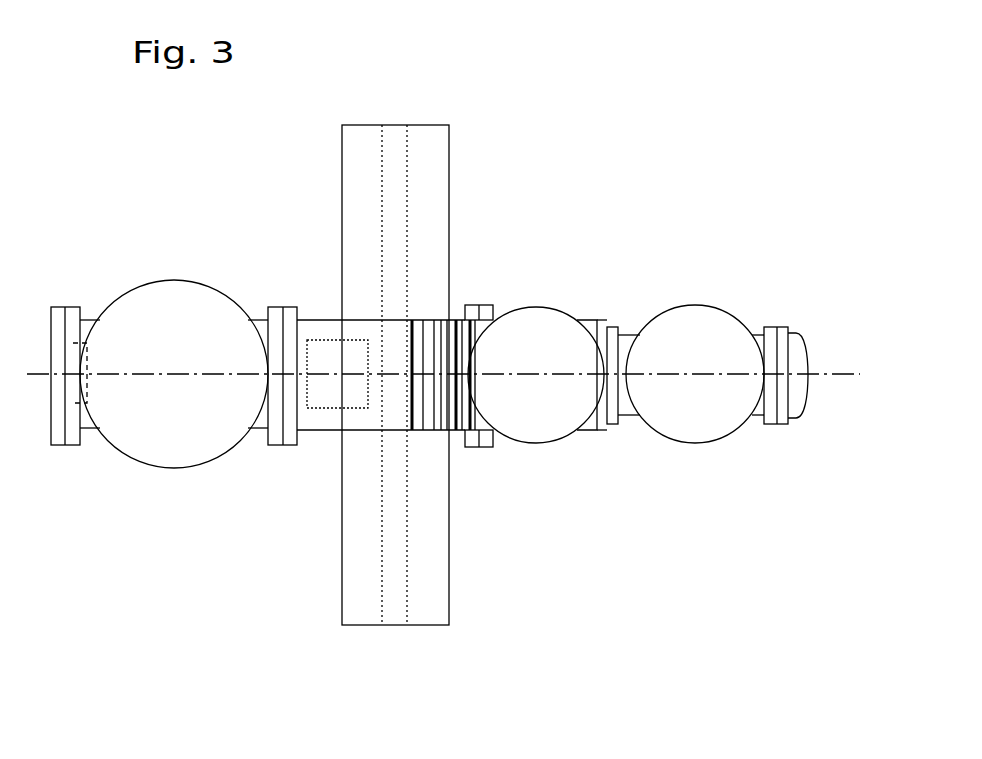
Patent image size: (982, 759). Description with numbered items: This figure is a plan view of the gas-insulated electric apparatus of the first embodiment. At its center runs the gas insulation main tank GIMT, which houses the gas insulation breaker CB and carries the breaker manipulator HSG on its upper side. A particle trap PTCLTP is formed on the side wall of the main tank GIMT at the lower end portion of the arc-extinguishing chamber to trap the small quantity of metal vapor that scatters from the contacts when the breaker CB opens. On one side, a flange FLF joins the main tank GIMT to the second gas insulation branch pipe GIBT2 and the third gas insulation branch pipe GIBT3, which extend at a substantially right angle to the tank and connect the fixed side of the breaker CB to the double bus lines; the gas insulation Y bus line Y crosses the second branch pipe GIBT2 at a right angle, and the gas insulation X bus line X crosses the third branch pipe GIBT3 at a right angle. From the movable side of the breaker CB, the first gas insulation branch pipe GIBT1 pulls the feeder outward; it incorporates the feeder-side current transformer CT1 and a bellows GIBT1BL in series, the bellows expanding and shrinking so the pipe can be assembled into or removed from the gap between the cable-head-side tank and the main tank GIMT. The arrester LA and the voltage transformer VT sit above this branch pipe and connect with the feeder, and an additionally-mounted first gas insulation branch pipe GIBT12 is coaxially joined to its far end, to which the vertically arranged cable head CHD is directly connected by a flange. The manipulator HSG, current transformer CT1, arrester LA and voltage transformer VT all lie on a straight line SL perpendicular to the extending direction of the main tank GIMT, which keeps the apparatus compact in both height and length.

The straight line SL is at (464, 372).
The gas insulation main tank GIMT is at (145, 385).
The particle trap PTCLTP is at (73, 343).
The gas insulation breaker CB is at (160, 400).
The breaker manipulator HSG is at (168, 288).
The flange FLF is at (283, 307).
The third gas insulation branch pipe GIBT3 is at (321, 434).
The second gas insulation branch pipe GIBT2 is at (317, 437).
The feeder-side current transformer CT1 is at (308, 340).
The gas insulation X bus line X is at (430, 610).
The gas insulation Y bus line Y is at (362, 610).
The bellows GIBT1BL is at (440, 403).
The first gas insulation branch pipe GIBT1 is at (481, 325).
The arrester LA is at (537, 410).
The additionally-mounted first gas insulation branch pipe GIBT12 is at (630, 340).
The voltage transformer VT is at (697, 407).
The cable head CHD is at (680, 422).